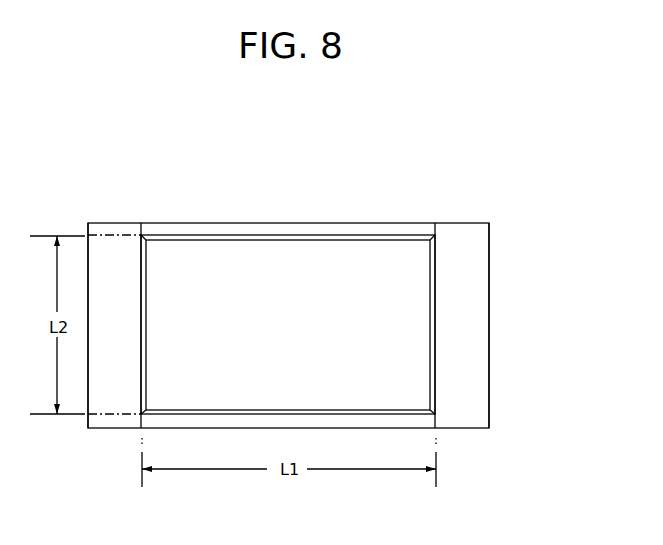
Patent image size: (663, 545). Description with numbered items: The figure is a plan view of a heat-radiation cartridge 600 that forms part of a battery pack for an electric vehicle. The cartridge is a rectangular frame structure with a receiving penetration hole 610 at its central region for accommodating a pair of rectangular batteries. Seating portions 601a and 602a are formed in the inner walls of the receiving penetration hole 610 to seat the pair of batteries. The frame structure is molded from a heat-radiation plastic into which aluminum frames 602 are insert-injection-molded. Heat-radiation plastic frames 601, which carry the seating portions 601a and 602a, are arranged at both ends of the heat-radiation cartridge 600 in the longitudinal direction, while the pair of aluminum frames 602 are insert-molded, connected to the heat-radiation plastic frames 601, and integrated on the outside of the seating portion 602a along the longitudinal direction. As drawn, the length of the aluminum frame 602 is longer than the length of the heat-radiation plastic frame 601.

The heat-radiation cartridge 600 is at (481, 209).
The heat-radiation plastic frame 601 is at (472, 291).
The seating portion 601a is at (141, 262).
The aluminum frame 602 is at (280, 230).
The seating portion 602a is at (180, 239).
The receiving penetration hole 610 is at (322, 257).